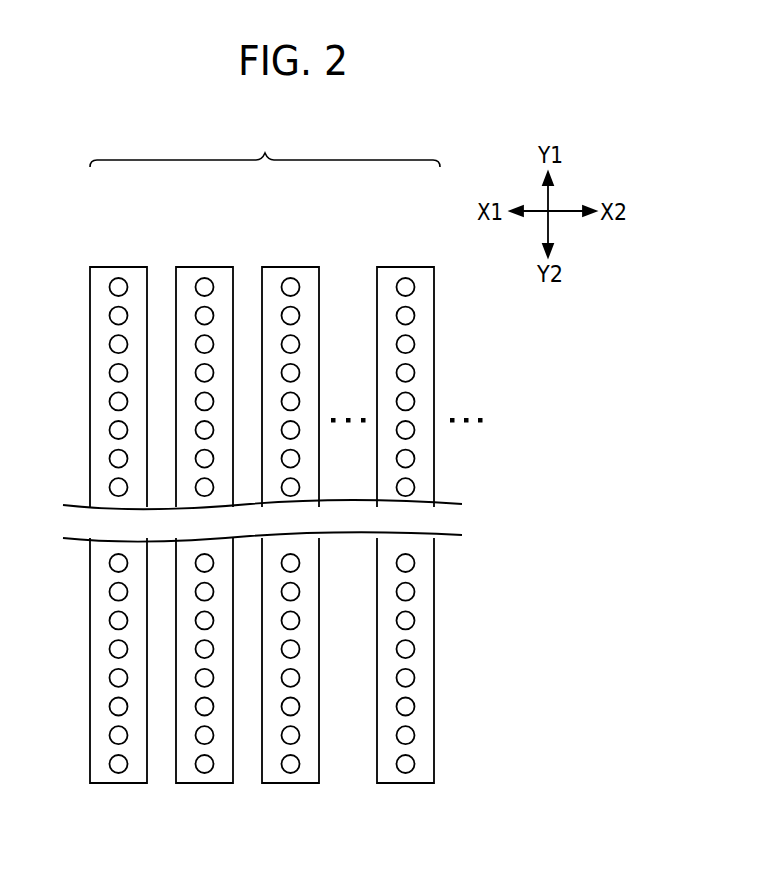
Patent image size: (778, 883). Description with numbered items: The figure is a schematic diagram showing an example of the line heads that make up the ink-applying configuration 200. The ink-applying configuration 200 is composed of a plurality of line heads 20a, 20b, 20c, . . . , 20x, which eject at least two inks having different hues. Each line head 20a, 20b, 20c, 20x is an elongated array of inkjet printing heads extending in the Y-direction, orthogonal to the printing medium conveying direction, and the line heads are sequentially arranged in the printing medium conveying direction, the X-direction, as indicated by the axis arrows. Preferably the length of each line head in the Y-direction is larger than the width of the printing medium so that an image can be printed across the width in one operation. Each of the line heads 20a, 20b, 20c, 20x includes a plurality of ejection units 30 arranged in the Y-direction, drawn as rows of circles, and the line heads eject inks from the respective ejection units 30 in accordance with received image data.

The ink-applying configuration 200 is at (265, 145).
The line head 20a is at (133, 267).
The line head 20b is at (221, 267).
The line head 20c is at (307, 267).
The line head 20x is at (421, 267).
The ejection unit 30 is at (109, 287).